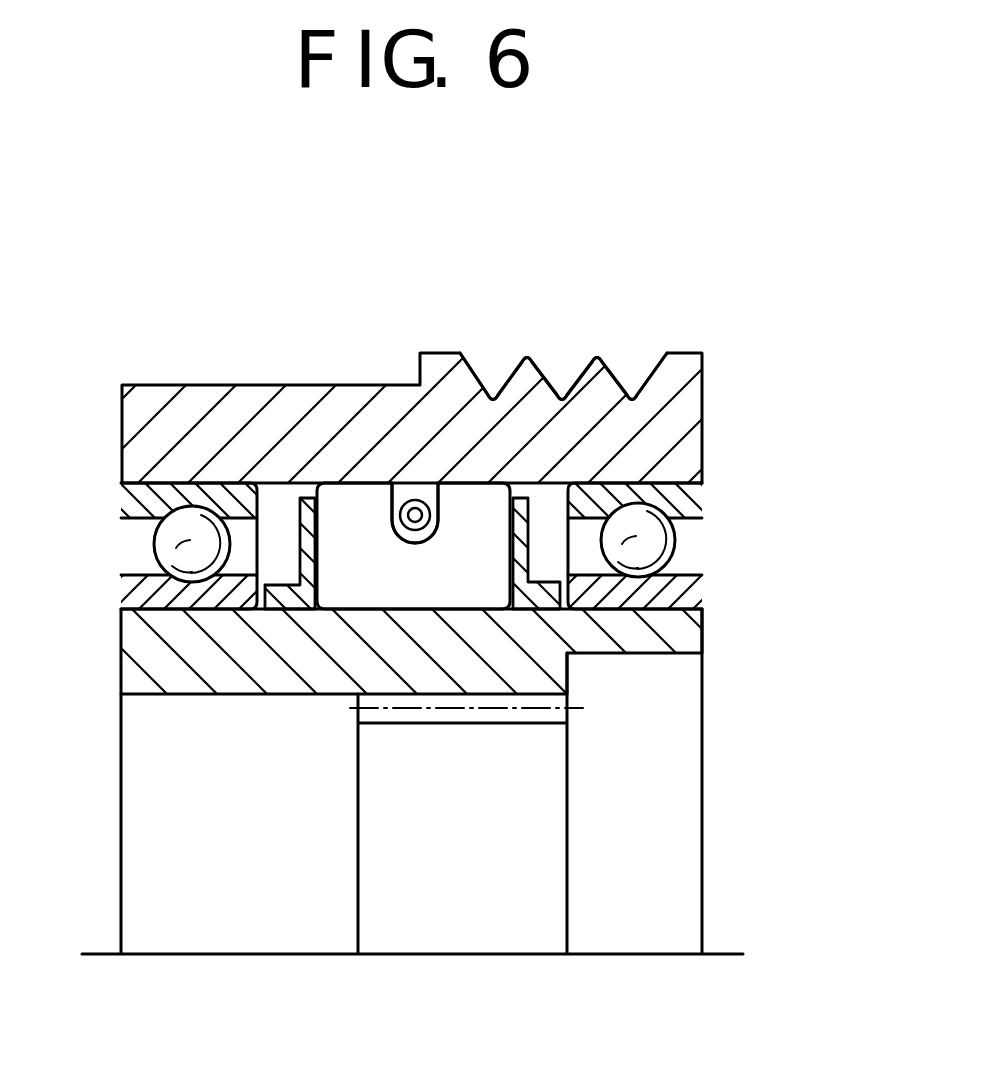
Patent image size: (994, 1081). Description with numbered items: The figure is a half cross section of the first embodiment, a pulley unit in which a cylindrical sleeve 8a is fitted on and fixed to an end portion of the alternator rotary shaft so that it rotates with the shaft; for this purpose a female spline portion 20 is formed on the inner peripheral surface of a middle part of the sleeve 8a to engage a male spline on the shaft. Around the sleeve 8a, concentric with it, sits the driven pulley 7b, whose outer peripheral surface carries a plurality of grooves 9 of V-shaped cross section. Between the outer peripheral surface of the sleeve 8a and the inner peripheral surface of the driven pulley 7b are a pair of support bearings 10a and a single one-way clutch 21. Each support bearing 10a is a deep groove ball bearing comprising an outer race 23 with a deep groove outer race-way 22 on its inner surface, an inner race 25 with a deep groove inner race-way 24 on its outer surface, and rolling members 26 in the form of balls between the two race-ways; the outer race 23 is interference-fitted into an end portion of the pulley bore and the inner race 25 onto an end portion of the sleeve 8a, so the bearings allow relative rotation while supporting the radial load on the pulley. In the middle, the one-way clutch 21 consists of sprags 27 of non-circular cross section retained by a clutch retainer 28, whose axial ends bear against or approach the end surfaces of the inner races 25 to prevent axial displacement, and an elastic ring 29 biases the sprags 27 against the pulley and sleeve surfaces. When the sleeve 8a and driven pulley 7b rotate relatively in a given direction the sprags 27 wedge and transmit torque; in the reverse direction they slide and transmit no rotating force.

The driven pulley 7b is at (677, 408).
The sleeve 8a is at (665, 628).
The grooves 9 is at (617, 358).
The support bearing 10a is at (175, 493).
The female spline portion 20 is at (447, 697).
The one-way clutch 21 is at (348, 506).
The outer race-way 22 is at (157, 535).
The outer race 23 is at (218, 498).
The inner race-way 24 is at (143, 603).
The inner race 25 is at (677, 592).
The rolling member 26 is at (157, 557).
The sprag 27 is at (370, 516).
The clutch retainer 28 is at (290, 597).
The elastic ring 29 is at (417, 497).